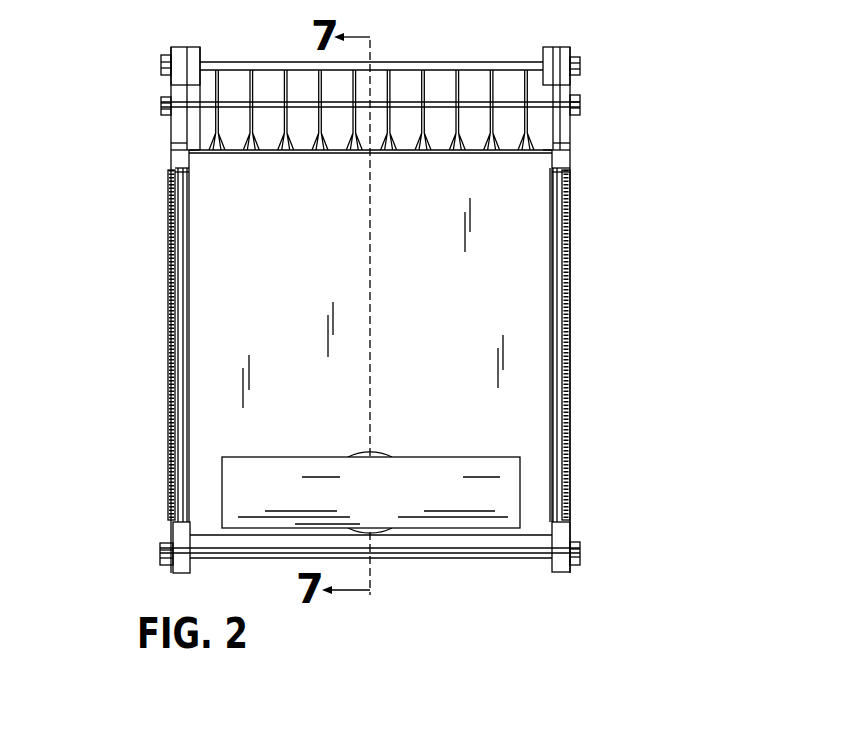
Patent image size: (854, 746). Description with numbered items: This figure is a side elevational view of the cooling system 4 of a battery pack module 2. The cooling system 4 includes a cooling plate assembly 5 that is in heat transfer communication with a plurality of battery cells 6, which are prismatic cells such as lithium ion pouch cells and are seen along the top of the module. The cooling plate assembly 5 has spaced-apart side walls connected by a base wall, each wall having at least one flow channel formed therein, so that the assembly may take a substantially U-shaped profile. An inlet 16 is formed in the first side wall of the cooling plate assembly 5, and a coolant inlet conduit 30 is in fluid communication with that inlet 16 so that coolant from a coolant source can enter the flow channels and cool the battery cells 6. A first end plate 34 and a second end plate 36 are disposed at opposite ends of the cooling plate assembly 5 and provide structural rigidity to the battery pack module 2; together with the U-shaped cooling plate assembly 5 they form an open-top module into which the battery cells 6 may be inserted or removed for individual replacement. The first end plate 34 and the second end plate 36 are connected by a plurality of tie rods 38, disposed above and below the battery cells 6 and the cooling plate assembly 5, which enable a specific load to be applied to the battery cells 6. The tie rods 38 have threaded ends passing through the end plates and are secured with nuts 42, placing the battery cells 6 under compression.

The battery pack module 2 is at (626, 58).
The cooling system 4 is at (228, 236).
The cooling plate assembly 5 is at (329, 205).
The battery cells 6 is at (457, 82).
The inlet 16 is at (374, 446).
The coolant inlet conduit 30 is at (435, 498).
The first end plate 34 is at (570, 297).
The second end plate 36 is at (170, 287).
The tie rods 38 is at (267, 62).
The nuts 42 is at (581, 56).